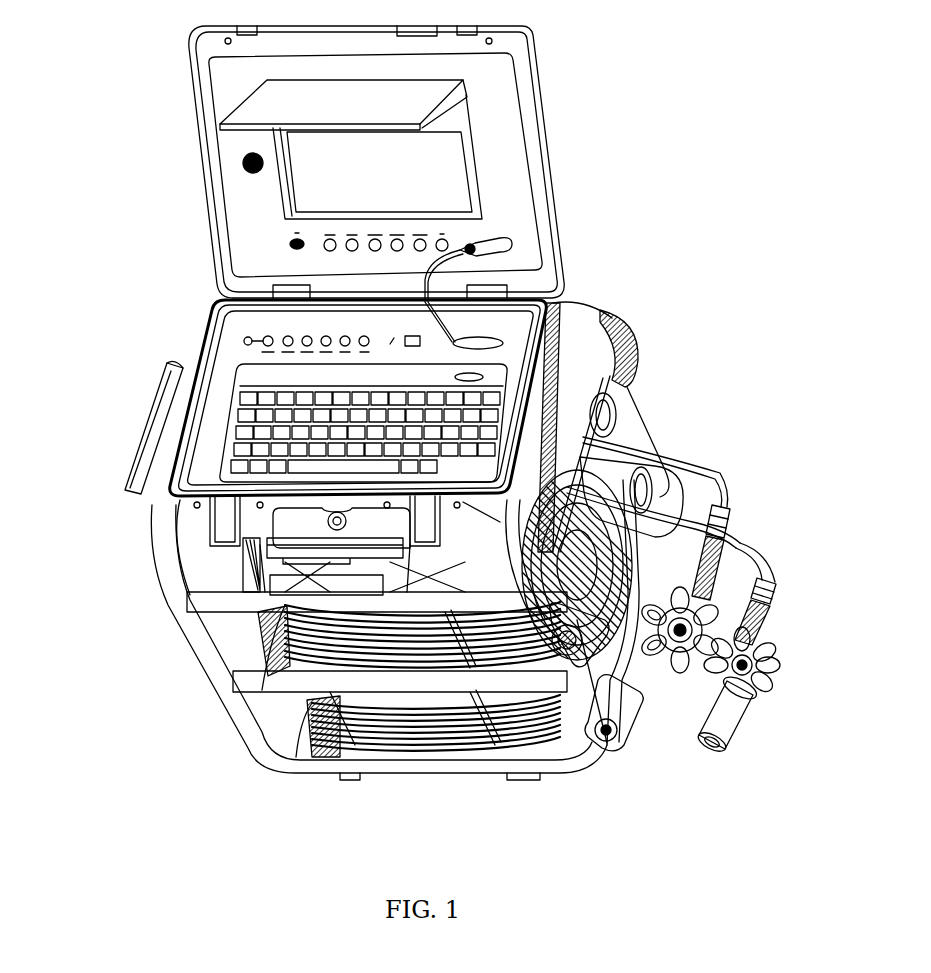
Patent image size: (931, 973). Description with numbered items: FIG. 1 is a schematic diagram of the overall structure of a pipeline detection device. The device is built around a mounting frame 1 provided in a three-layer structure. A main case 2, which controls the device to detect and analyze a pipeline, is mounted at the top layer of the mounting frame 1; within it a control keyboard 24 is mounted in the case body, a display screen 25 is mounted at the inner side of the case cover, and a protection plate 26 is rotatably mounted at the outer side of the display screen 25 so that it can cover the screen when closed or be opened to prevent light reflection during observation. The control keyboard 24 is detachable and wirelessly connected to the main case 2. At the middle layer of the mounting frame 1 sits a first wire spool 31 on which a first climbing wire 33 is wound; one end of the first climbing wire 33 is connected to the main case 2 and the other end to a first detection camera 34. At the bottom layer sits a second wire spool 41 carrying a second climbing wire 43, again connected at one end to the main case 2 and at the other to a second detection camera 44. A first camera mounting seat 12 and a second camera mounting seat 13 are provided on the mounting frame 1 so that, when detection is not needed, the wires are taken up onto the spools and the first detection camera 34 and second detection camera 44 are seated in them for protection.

The mounting frame 1 is at (203, 632).
The main case 2 is at (177, 428).
The first camera mounting seat 12 is at (575, 637).
The second camera mounting seat 13 is at (607, 745).
The control keyboard 24 is at (250, 410).
The display screen 25 is at (323, 182).
The protection plate 26 is at (270, 115).
The first wire spool 31 is at (240, 608).
The first climbing wire 33 is at (307, 670).
The first detection camera 34 is at (680, 660).
The second wire spool 41 is at (483, 703).
The second climbing wire 43 is at (412, 743).
The second detection camera 44 is at (743, 710).